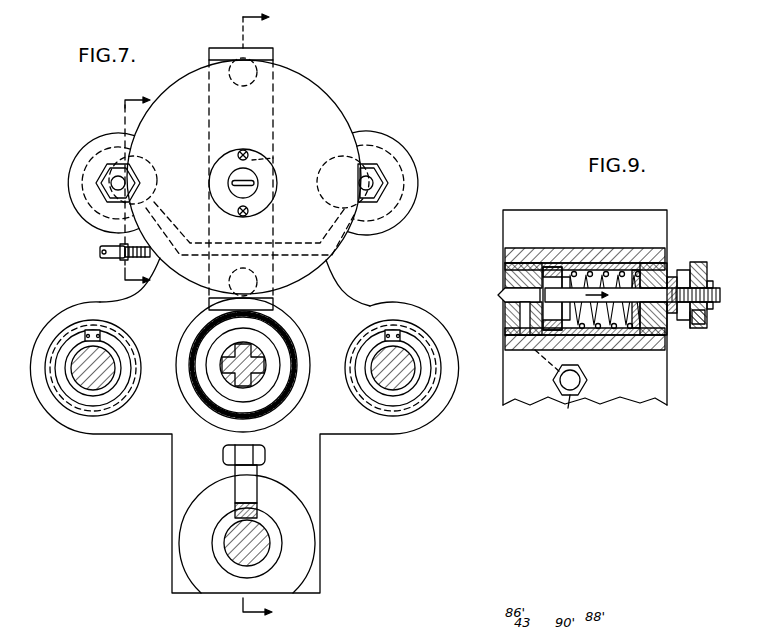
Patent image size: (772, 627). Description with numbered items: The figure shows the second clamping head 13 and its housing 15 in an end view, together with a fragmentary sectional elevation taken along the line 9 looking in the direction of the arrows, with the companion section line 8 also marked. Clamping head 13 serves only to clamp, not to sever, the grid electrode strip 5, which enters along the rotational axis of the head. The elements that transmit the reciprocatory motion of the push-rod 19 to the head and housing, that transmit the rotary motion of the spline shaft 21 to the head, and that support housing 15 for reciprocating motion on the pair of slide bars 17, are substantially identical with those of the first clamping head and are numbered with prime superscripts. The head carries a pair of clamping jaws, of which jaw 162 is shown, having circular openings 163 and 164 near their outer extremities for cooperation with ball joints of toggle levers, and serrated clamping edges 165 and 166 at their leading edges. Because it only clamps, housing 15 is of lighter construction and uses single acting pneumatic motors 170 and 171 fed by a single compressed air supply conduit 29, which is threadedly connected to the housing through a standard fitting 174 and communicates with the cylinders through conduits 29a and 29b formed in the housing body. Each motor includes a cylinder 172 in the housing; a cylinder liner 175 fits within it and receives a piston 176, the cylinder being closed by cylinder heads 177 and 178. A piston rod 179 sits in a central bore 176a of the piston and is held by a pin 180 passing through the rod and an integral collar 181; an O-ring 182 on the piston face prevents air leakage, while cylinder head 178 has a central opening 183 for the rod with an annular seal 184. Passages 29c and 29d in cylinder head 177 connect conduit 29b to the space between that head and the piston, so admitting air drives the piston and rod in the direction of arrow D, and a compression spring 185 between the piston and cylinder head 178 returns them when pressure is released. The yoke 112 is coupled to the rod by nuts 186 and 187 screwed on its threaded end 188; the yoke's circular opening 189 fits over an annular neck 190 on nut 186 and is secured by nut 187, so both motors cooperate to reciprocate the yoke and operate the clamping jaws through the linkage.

In FIG. 7, the grid electrode strip 5 is at (254, 183).
In FIG. 7, the section line 8- 8 is at (249, 315).
In FIG. 7, the section line 9— 9 is at (128, 192).
In FIG. 7, the second clamping head 13 is at (317, 98).
In FIG. 7, the housing 15 is at (392, 305).
In FIG. 9, the housing 15 is at (535, 210).
In FIG. 7, the slide bars 17 is at (74, 367).
In FIG. 7, the push-rod 19 is at (258, 538).
In FIG. 7, the spline shaft 21 is at (258, 372).
In FIG. 7, the compressed air supply conduit 29 is at (100, 252).
In FIG. 9, the compressed air supply conduit 29 is at (564, 411).
In FIG. 7, the conduit 29a is at (168, 256).
In FIG. 9, the conduit 29a is at (582, 398).
In FIG. 7, the conduit 29b is at (172, 208).
In FIG. 9, the conduit 29b is at (552, 372).
In FIG. 9, the passage 29c is at (520, 322).
In FIG. 9, the passage 29d is at (504, 295).
In FIG. 7, the nut 112 is at (378, 168).
In FIG. 9, the nut 112 is at (700, 266).
In FIG. 7, the clamping jaw 162 is at (327, 243).
In FIG. 7, the circular opening 163 is at (266, 62).
In FIG. 7, the circular opening 164 is at (278, 297).
In FIG. 7, the serrated clamping edge 165 is at (273, 158).
In FIG. 7, the serrated clamping edge 166 is at (212, 218).
In FIG. 7, the single acting motor 170 is at (56, 175).
In FIG. 9, the single acting motor 170 is at (496, 262).
In FIG. 7, the single acting motor 171 is at (450, 172).
In FIG. 7, the cylinder 172 is at (146, 158).
In FIG. 9, the cylinder 172 is at (622, 262).
In FIG. 7, the fitting 174 is at (120, 258).
In FIG. 9, the fitting 174 is at (587, 380).
In FIG. 9, the cylinder liner 175 is at (638, 268).
In FIG. 9, the piston 176 is at (520, 271).
In FIG. 9, the central bore 176a is at (592, 336).
In FIG. 9, the cylinder head 177 is at (510, 332).
In FIG. 7, the cylinder head 178 is at (82, 194).
In FIG. 9, the cylinder head 178 is at (672, 313).
In FIG. 7, the piston rod 179 is at (123, 178).
In FIG. 9, the piston rod 179 is at (630, 302).
In FIG. 9, the pin 180 is at (565, 278).
In FIG. 7, the integral collar 181 is at (273, 103).
In FIG. 9, the integral collar 181 is at (580, 270).
In FIG. 9, the O-ring 182 is at (548, 270).
In FIG. 9, the central opening 183 is at (658, 265).
In FIG. 9, the annular seal 184 is at (665, 290).
In FIG. 9, the compression spring 185 is at (600, 272).
In FIG. 9, the nut 186 is at (686, 324).
In FIG. 7, the nut 187 is at (100, 197).
In FIG. 9, the nut 187 is at (712, 300).
In FIG. 9, the threaded end 188 is at (708, 288).
In FIG. 9, the circular opening 189 is at (712, 290).
In FIG. 9, the annular neck 190 is at (703, 318).